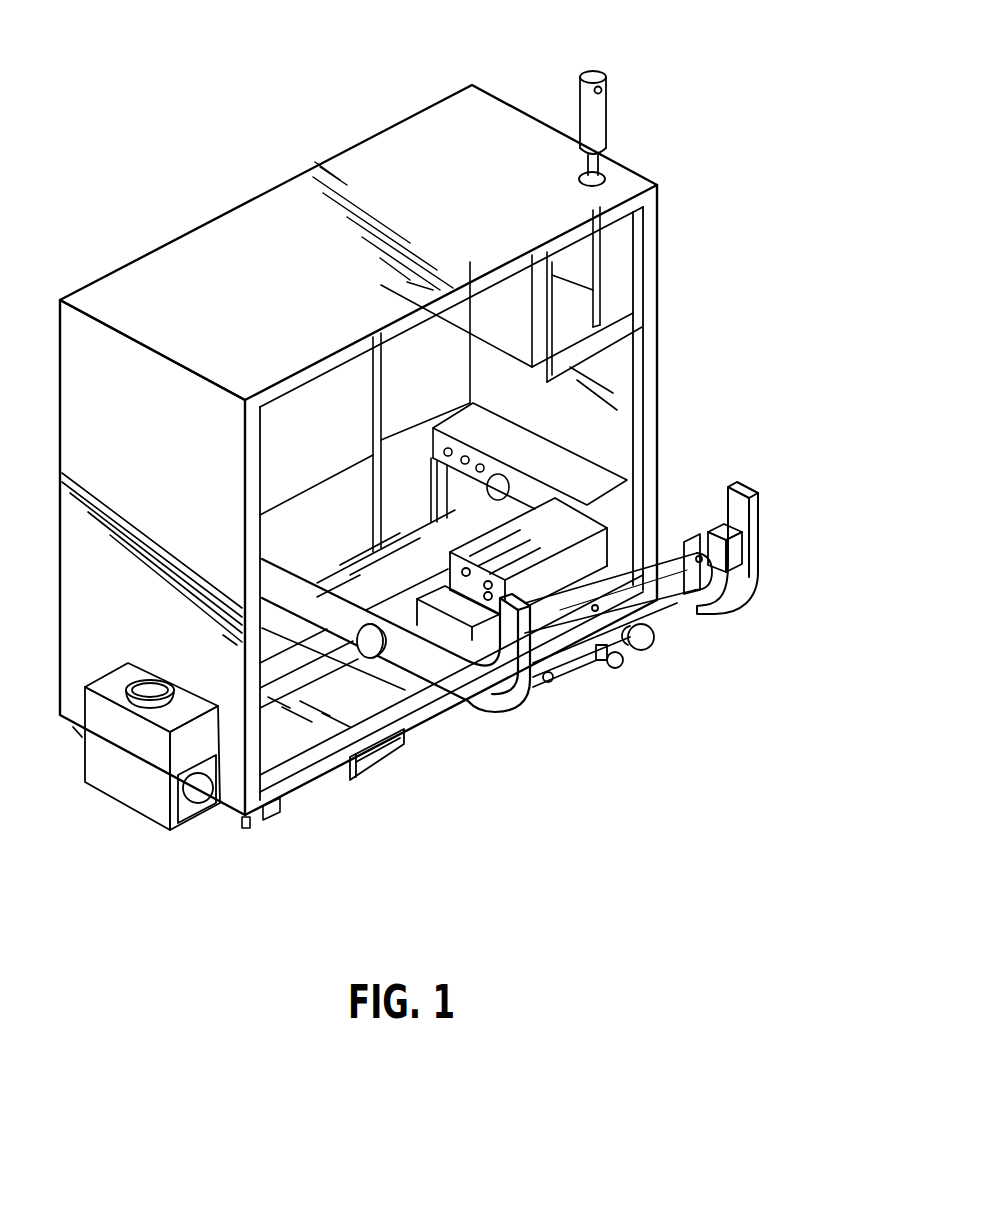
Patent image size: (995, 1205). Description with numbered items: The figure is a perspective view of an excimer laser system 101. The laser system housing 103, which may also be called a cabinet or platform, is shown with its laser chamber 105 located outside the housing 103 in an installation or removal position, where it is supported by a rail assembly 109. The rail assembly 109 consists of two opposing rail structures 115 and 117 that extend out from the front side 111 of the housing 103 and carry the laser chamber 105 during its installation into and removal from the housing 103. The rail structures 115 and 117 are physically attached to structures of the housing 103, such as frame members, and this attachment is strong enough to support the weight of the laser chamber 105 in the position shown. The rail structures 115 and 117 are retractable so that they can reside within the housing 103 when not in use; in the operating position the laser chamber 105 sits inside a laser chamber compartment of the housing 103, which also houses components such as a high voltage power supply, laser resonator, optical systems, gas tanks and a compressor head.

The laser system 101 is at (298, 123).
The laser system housing 103 is at (458, 138).
The laser chamber 105 is at (572, 683).
The rail assembly 109 is at (760, 557).
The front side 111 is at (717, 365).
The rail structure 115 is at (398, 662).
The rail structure 117 is at (765, 483).